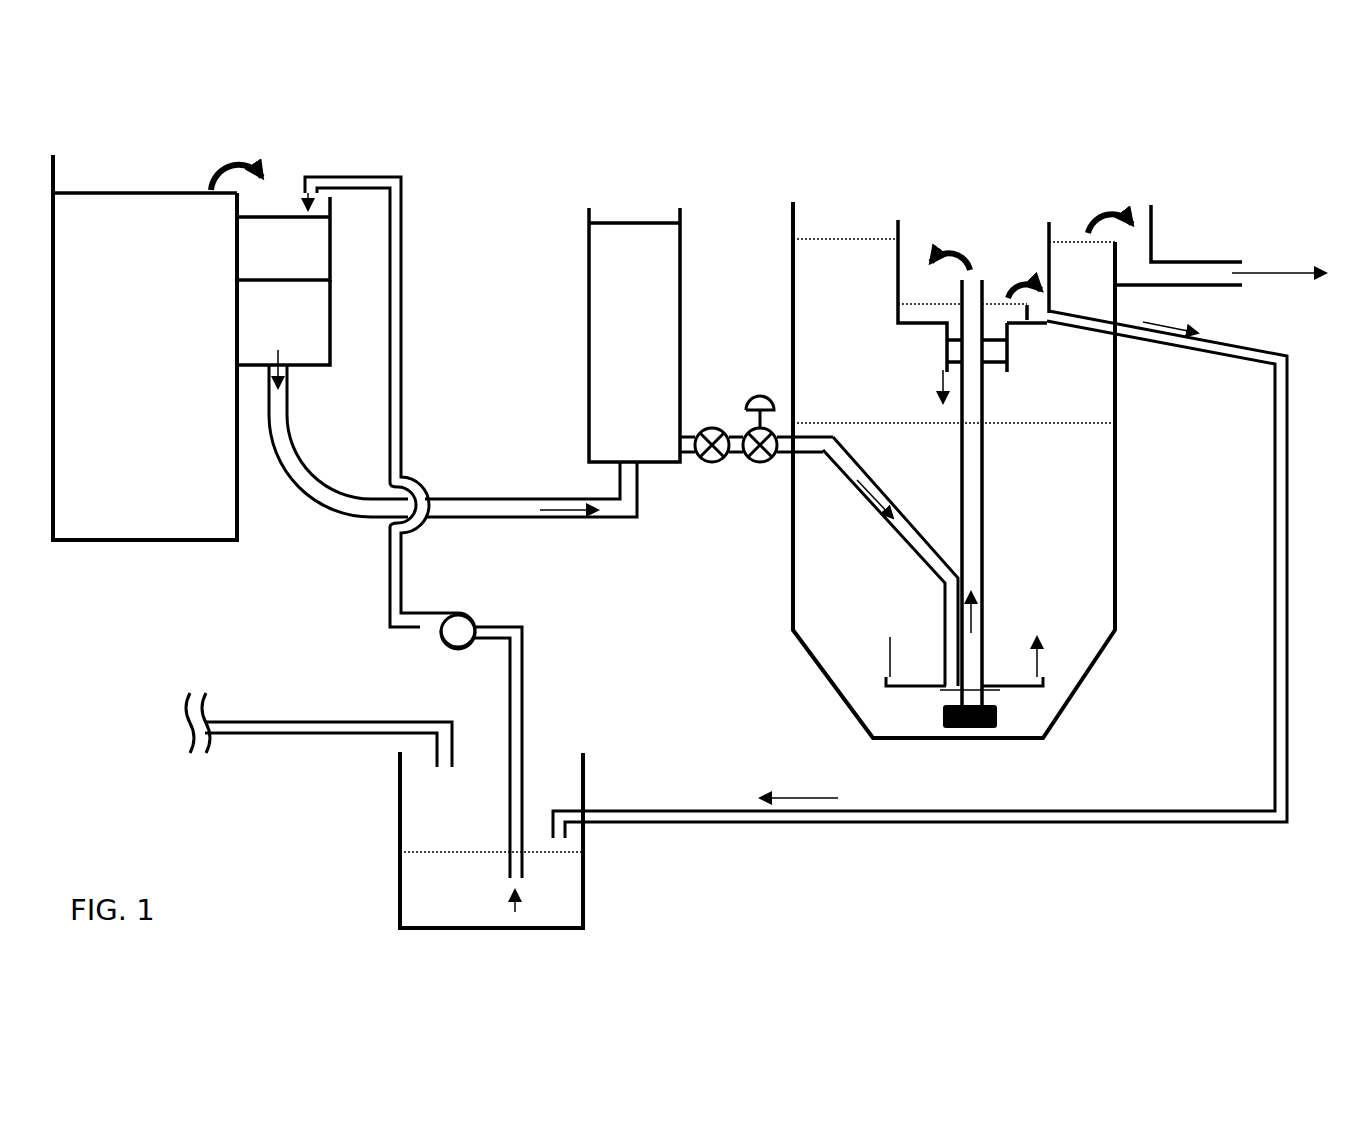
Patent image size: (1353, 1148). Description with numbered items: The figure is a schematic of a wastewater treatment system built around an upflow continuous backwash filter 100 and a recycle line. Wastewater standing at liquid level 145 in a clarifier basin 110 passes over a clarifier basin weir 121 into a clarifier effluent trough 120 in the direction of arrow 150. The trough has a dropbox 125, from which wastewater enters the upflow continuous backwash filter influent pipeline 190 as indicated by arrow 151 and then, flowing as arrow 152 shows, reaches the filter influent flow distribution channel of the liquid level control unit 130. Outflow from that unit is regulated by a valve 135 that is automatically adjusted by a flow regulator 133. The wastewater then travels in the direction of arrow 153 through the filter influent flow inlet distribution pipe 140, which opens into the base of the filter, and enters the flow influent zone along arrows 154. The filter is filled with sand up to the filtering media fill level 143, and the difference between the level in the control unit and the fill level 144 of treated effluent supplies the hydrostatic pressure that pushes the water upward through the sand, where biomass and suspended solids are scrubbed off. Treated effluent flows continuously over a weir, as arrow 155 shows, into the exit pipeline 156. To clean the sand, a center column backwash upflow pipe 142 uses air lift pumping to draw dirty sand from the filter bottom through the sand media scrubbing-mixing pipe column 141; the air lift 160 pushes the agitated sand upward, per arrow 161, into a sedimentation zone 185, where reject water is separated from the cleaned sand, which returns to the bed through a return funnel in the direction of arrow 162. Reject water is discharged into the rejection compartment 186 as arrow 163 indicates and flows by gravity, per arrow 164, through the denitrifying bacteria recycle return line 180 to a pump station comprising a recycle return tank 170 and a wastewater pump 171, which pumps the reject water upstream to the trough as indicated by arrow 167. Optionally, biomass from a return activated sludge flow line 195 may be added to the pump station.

The upflow continuous backwash filter 100 is at (761, 200).
The clarifier basin 110 is at (145, 347).
The clarifier effluent trough 120 is at (283, 238).
The clarifier basin weir 121 is at (233, 207).
The dropbox 125 is at (283, 322).
The liquid level control unit 130 is at (634, 335).
The flow regulator 133 is at (757, 383).
The valve 135 is at (755, 468).
The filter influent flow inlet distribution pipe 140 is at (1023, 693).
The sand media scrubbing-mixing pipe column 141 is at (993, 733).
The center column backwash upflow pipe 142 is at (983, 635).
The filtering media fill level 143 is at (1080, 423).
The fill level of treated effluent 144 is at (852, 237).
The liquid level 145 is at (142, 193).
The arrow 150 is at (243, 144).
The arrow 151 is at (283, 355).
The arrow 152 is at (563, 517).
The arrow 153 is at (890, 462).
The arrows 154 is at (1040, 660).
The arrow 155 is at (1105, 207).
The exit pipeline 156 is at (1279, 253).
The air lift 160 is at (972, 617).
The arrow 161 is at (955, 243).
The arrow 162 is at (910, 388).
The arrow 163 is at (1026, 277).
The arrow 164 is at (993, 547).
The arrow 167 is at (317, 188).
The recycle return tank 170 is at (397, 773).
The wastewater pump 171 is at (443, 643).
The denitrifying bacteria recycle return line 180 is at (1275, 733).
The sedimentation zone 185 is at (926, 315).
The rejection compartment 186 is at (1033, 308).
The upflow continuous backwash filter influent pipeline 190 is at (470, 498).
The return activated sludge (RAS) flow line 195 is at (277, 720).